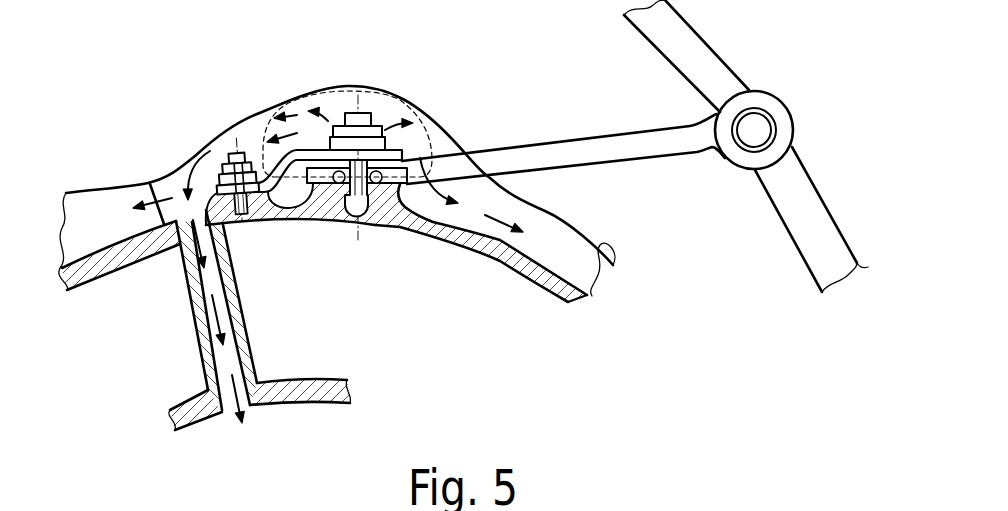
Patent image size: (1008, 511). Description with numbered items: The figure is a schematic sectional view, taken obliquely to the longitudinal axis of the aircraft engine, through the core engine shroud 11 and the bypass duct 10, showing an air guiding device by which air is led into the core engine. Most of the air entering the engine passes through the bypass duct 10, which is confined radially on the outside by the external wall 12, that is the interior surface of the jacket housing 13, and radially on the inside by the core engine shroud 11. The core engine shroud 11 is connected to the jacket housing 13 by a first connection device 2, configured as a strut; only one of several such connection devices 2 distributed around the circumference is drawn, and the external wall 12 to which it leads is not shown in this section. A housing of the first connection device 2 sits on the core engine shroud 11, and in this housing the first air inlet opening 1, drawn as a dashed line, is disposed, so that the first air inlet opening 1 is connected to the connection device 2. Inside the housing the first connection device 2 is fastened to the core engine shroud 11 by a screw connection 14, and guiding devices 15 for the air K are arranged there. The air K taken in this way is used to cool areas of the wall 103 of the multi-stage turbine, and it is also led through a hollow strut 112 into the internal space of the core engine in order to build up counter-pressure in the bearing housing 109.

The first air inlet opening 1 is at (373, 90).
The first connection device 2 is at (535, 150).
The bypass duct 10 is at (647, 84).
The core engine shroud 11 is at (598, 249).
The external wall 12 is at (815, 278).
The jacket housing 13 is at (446, 126).
The screw connection 14 is at (373, 207).
The guiding devices 15 is at (278, 88).
The wall of the multi-stage turbine 103 is at (503, 268).
The bearing housing 109 is at (342, 381).
The hollow strut 112 is at (243, 348).
The air K is at (313, 297).